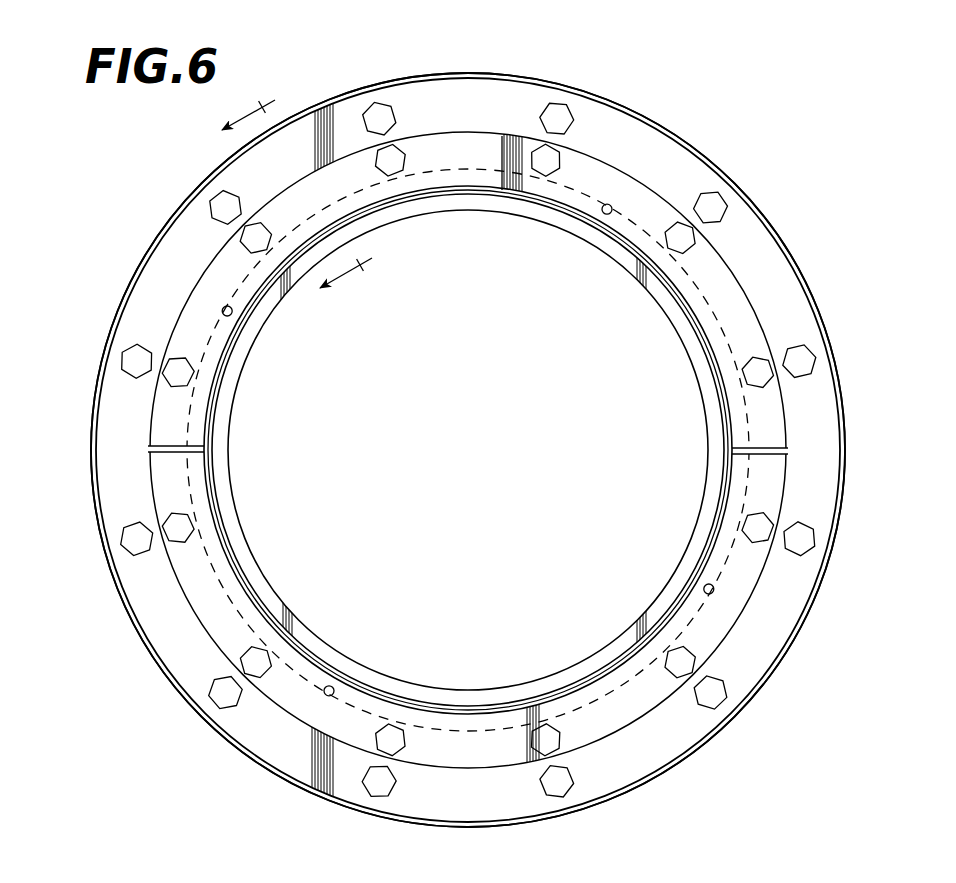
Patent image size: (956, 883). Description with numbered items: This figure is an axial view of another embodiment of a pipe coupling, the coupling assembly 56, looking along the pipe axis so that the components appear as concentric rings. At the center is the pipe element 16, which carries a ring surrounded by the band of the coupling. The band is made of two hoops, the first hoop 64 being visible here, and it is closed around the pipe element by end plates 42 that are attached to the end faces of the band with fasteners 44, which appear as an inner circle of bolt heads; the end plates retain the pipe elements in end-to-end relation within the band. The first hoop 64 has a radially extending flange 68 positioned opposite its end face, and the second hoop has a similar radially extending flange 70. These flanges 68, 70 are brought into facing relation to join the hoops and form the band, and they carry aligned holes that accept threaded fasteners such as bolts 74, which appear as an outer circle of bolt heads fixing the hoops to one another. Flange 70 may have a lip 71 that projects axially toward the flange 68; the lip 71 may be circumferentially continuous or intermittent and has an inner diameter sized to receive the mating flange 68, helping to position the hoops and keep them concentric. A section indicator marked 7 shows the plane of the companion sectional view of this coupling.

The coupling assembly 56 is at (787, 137).
The lip 71 is at (372, 88).
The radially extending flange 68 is at (430, 125).
The radially extending flange 70 is at (328, 102).
The bolts 74 is at (573, 120).
The end plates 42 is at (732, 305).
The first hoop 64 is at (503, 124).
The fasteners 44 is at (690, 242).
The pipe element 16 is at (703, 358).
The section line 7- 7 is at (307, 185).